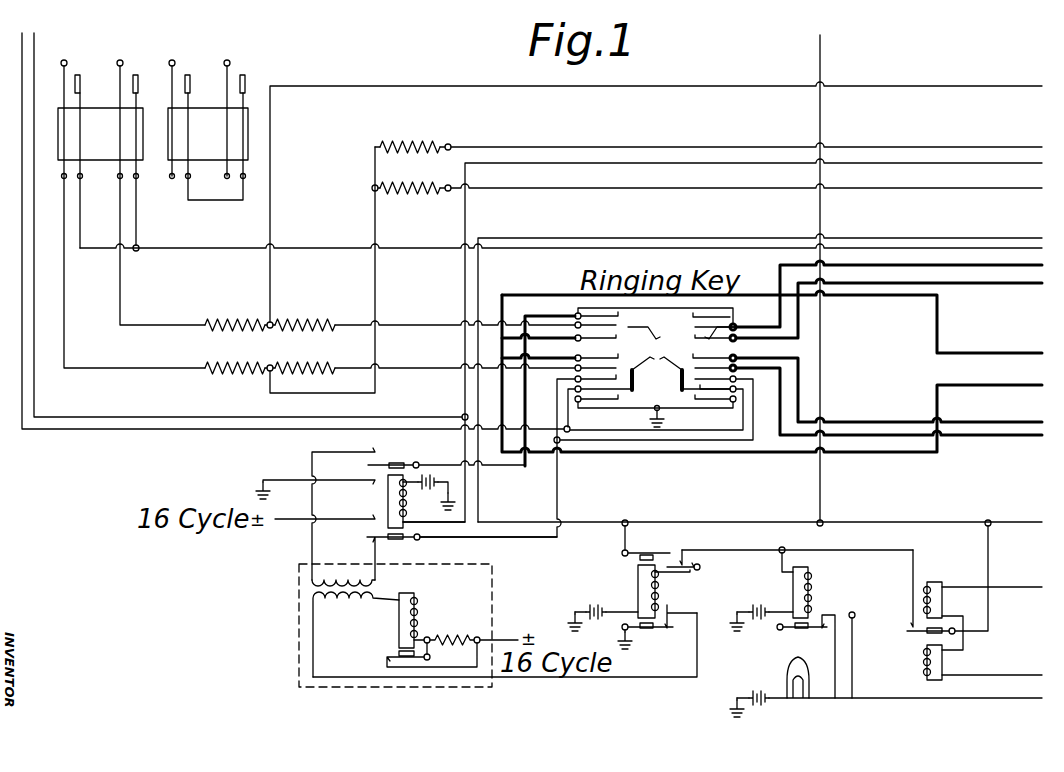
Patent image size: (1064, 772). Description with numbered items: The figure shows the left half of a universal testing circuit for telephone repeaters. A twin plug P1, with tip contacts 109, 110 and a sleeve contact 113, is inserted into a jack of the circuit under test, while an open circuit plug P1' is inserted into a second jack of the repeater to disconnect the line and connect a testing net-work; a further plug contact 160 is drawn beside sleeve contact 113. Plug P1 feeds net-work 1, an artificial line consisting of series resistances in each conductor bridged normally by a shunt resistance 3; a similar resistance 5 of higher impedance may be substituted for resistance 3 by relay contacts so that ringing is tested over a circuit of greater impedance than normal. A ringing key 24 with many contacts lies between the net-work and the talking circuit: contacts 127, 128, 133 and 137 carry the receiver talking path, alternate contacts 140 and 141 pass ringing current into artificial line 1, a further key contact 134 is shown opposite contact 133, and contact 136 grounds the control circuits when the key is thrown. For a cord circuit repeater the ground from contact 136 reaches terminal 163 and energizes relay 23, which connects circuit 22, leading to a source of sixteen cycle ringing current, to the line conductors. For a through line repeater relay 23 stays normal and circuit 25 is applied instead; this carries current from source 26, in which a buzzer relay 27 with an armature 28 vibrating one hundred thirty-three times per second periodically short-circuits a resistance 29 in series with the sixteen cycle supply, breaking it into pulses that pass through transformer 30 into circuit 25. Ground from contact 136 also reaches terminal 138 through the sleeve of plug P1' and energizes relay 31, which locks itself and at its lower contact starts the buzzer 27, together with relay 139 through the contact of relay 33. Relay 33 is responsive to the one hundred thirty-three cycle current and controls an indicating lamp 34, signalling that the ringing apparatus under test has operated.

The net-work 1 is at (393, 346).
The shunt resistance 3 is at (398, 196).
The resistance 5 is at (412, 146).
The twin plug P1 is at (100, 89).
The open circuit plug P1' is at (208, 108).
The tip contact 109 is at (66, 50).
The tip contact 110 is at (120, 60).
The sleeve contact 113 is at (81, 82).
The plug contact 160 is at (139, 82).
The terminal 163 is at (462, 415).
The alternate contact of key 24 141 is at (616, 317).
The contact of key 24 133 is at (633, 327).
The ringing key contact 134 is at (718, 320).
The alternate contact of key 24 140 is at (640, 352).
The contact of ringing key 24 127 is at (672, 344).
The contact of key 24 128 is at (618, 362).
The contact of key 24 137 is at (655, 381).
The ringing key 24 is at (655, 405).
The contact of the ringing key 136 is at (636, 412).
The circuit 22 is at (290, 490).
The relay 23 is at (386, 502).
The circuit 25 is at (366, 548).
The transformer 30 is at (314, 590).
The source of 133 cycle current 26 is at (505, 645).
The buzzer relay 27 is at (421, 624).
The armature 28 is at (393, 654).
The resistance 29 is at (455, 636).
The terminal 138 is at (821, 523).
The relay 31 is at (637, 582).
The relay 139 is at (818, 588).
The indicating lamp 34 is at (786, 680).
The relay 33 is at (944, 604).